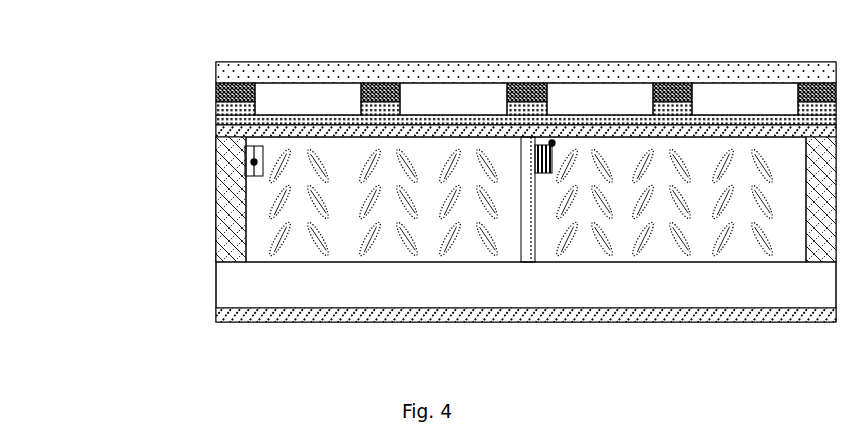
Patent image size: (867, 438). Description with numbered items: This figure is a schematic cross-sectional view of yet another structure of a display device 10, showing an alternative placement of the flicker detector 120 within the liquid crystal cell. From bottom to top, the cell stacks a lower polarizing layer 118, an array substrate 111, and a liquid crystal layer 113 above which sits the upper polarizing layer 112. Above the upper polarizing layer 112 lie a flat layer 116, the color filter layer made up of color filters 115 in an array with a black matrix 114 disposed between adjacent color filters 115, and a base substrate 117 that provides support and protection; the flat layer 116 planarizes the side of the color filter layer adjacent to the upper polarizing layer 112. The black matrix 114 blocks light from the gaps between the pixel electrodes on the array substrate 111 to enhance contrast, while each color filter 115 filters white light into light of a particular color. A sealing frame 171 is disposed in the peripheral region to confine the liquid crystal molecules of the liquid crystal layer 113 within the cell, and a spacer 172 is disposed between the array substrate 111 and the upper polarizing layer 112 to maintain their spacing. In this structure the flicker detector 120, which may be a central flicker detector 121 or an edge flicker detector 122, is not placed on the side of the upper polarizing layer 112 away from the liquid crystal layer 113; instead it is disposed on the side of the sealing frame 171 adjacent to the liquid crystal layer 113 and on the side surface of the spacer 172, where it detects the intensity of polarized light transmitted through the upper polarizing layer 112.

The display device 10 is at (811, 28).
The base substrate 117 is at (459, 63).
The black matrix 114 is at (459, 88).
The color filter 115 is at (500, 75).
The flat layer 116 is at (459, 130).
The upper polarizing layer 112 is at (459, 154).
The flicker detector 120 is at (434, 148).
The central flicker detector 121 is at (526, 80).
The edge flicker detector 122 is at (125, 199).
The sealing frame 171 is at (459, 199).
The liquid crystal layer 113 is at (444, 211).
The spacer 172 is at (580, 247).
The array substrate 111 is at (459, 292).
The lower polarizing layer 118 is at (459, 330).